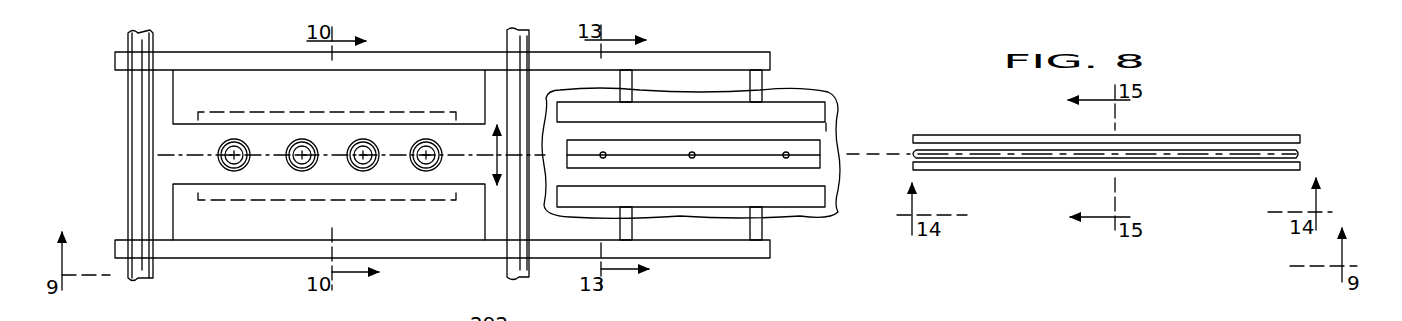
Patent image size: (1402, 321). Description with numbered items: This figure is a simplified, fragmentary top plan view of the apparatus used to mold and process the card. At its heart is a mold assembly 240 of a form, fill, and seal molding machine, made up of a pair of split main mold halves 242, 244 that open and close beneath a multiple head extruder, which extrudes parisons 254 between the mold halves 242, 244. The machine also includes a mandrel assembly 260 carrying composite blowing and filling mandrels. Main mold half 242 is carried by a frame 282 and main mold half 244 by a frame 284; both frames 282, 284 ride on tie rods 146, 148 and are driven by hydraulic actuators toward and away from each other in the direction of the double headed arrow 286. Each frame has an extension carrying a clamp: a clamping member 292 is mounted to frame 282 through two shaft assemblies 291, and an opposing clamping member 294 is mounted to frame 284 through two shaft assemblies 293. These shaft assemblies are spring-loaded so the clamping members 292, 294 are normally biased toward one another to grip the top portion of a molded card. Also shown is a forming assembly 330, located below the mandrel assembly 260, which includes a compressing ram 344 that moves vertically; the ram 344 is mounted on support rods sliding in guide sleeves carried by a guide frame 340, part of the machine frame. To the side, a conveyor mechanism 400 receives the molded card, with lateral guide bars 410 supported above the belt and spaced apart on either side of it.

The tie rod 146 is at (153, 264).
The tie rod 148 is at (529, 264).
The mold assembly 240 is at (447, 155).
The main mold half 242 is at (193, 103).
The main mold half 244 is at (188, 193).
The parison 254 is at (300, 139).
The mandrel assembly 260 is at (897, 312).
The frame 282 is at (668, 62).
The frame 284 is at (725, 242).
The double headed arrow 286 is at (492, 152).
The shaft assemblies 291 is at (762, 79).
The clamping member 292 is at (787, 110).
The shaft assemblies 293 is at (762, 221).
The clamping member 294 is at (803, 192).
The forming assembly 330 is at (829, 127).
The guide frame 340 is at (838, 200).
The compressing ram 344 is at (829, 160).
The conveyor mechanism 400 is at (1258, 172).
The guide bars 410 is at (933, 135).